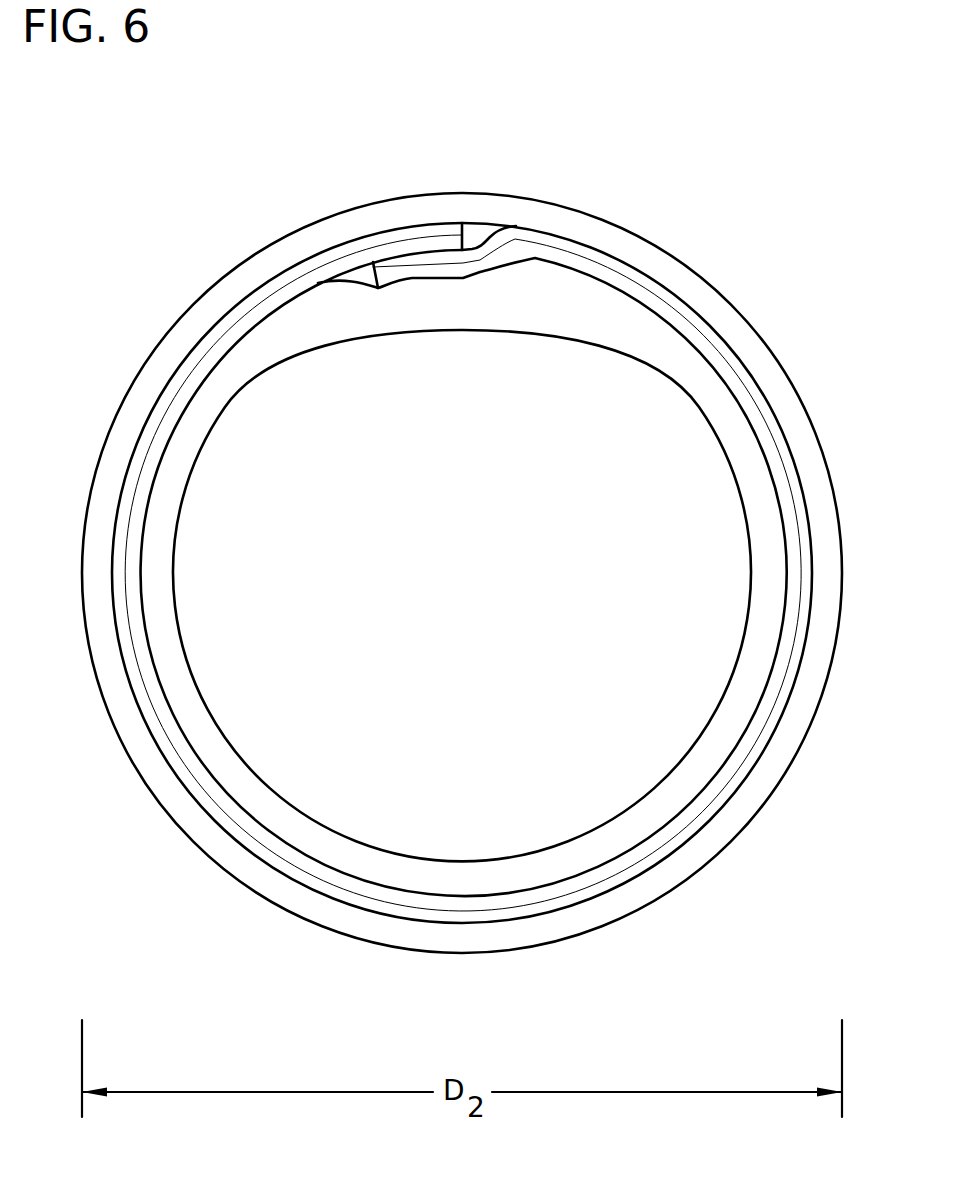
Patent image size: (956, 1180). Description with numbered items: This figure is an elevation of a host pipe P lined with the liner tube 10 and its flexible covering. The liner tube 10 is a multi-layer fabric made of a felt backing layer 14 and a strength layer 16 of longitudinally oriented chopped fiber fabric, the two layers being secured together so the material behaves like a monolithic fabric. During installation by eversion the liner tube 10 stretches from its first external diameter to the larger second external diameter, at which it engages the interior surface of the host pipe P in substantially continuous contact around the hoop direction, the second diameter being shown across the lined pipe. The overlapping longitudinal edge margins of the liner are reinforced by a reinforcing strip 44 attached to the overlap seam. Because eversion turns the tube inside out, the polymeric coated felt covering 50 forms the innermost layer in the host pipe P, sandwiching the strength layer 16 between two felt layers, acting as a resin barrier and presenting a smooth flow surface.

The host pipe P is at (650, 255).
The liner tube 10 is at (498, 263).
The felt backing layer 14 is at (518, 912).
The strength layer 16 is at (277, 302).
The reinforcing strip 44 is at (378, 292).
The polymeric coated felt covering 50 is at (453, 334).